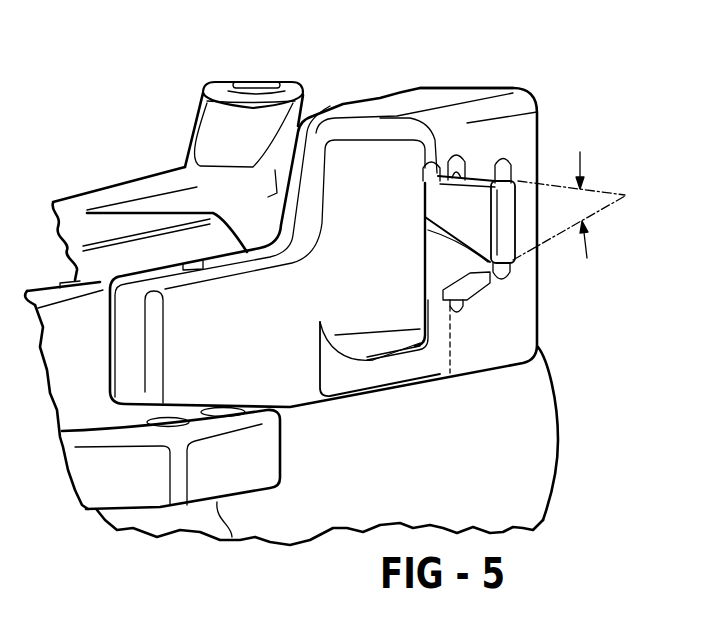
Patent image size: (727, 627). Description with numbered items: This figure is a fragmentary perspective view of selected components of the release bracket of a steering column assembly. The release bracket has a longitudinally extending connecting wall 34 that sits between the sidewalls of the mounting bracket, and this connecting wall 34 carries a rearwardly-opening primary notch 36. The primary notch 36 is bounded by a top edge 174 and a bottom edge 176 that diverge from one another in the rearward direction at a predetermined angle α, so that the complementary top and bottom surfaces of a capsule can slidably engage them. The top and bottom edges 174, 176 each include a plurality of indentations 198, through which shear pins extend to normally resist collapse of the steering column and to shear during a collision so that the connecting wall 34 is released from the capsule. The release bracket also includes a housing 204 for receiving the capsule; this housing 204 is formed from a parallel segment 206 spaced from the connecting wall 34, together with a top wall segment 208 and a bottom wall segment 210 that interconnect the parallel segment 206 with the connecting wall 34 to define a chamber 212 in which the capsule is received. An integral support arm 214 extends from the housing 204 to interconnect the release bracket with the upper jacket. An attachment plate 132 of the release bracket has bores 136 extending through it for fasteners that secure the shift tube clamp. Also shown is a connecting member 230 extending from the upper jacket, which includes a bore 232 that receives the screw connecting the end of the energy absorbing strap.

The connecting wall 34 is at (490, 297).
The primary notch 36 is at (523, 210).
The attachment plate 132 is at (233, 538).
The bore 136 is at (228, 406).
The top edge 174 is at (423, 184).
The bottom edge 176 is at (425, 235).
The indentation 198 is at (458, 161).
The housing 204 is at (386, 98).
The parallel segment 206 is at (282, 222).
The top wall segment 208 is at (447, 92).
The bottom wall segment 210 is at (443, 387).
The chamber 212 is at (357, 330).
The support arm 214 is at (180, 270).
The connecting member 230 is at (200, 106).
The bore 232 is at (262, 80).